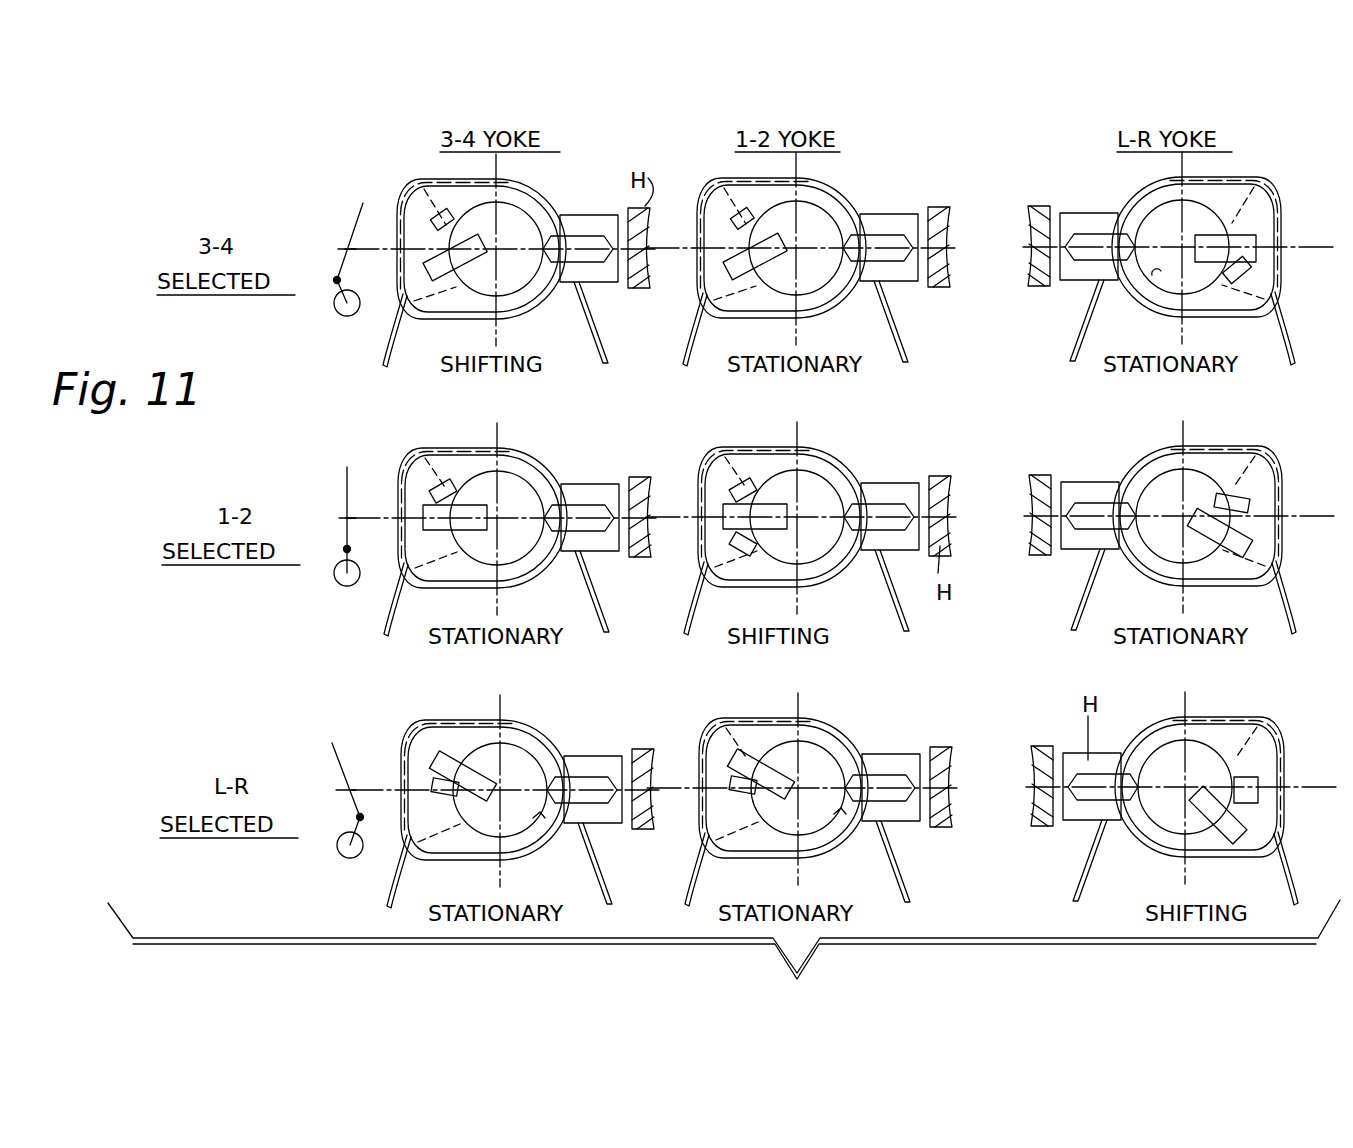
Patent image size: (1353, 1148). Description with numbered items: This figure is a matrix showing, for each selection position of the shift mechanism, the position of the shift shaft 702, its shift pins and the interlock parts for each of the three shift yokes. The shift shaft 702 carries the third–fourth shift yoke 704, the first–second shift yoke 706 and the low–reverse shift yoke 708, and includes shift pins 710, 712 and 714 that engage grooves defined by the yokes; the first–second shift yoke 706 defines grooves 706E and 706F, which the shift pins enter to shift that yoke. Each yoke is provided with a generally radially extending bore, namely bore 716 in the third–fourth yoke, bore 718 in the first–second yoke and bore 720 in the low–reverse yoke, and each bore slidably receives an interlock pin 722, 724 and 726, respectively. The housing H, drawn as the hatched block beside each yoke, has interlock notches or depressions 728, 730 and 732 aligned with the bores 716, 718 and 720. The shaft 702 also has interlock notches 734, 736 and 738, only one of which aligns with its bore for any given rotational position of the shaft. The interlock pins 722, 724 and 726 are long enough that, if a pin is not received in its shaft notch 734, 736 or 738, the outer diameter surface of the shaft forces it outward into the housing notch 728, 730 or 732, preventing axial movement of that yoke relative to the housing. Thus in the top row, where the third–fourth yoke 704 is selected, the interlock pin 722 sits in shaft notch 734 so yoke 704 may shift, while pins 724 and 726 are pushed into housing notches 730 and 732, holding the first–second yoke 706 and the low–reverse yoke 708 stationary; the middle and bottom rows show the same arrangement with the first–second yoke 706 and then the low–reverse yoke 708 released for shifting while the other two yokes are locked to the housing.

The shift shaft 702 is at (503, 222).
The 3-4 shift yoke 704 is at (423, 337).
The 1-2 shift yoke 706 is at (897, 347).
The groove 706E is at (735, 220).
The groove 706F is at (737, 550).
The L-R shift yoke 708 is at (1257, 337).
The shift pin 710 is at (440, 280).
The shift pin 712 is at (582, 258).
The shift pin 714 is at (1237, 252).
The radially extending bore 716 is at (616, 322).
The radially extending bore 718 is at (885, 236).
The radially extending bore 720 is at (1075, 236).
The interlock pin 722 is at (580, 510).
The interlock pin 724 is at (883, 515).
The interlock pin 726 is at (1080, 523).
The housing interlock notch 728 is at (648, 480).
The housing interlock notch 730 is at (953, 500).
The housing interlock notch 732 is at (1033, 803).
The shaft interlock notch 734 is at (537, 820).
The shaft interlock notch 736 is at (845, 805).
The shaft interlock notch 738 is at (1163, 277).